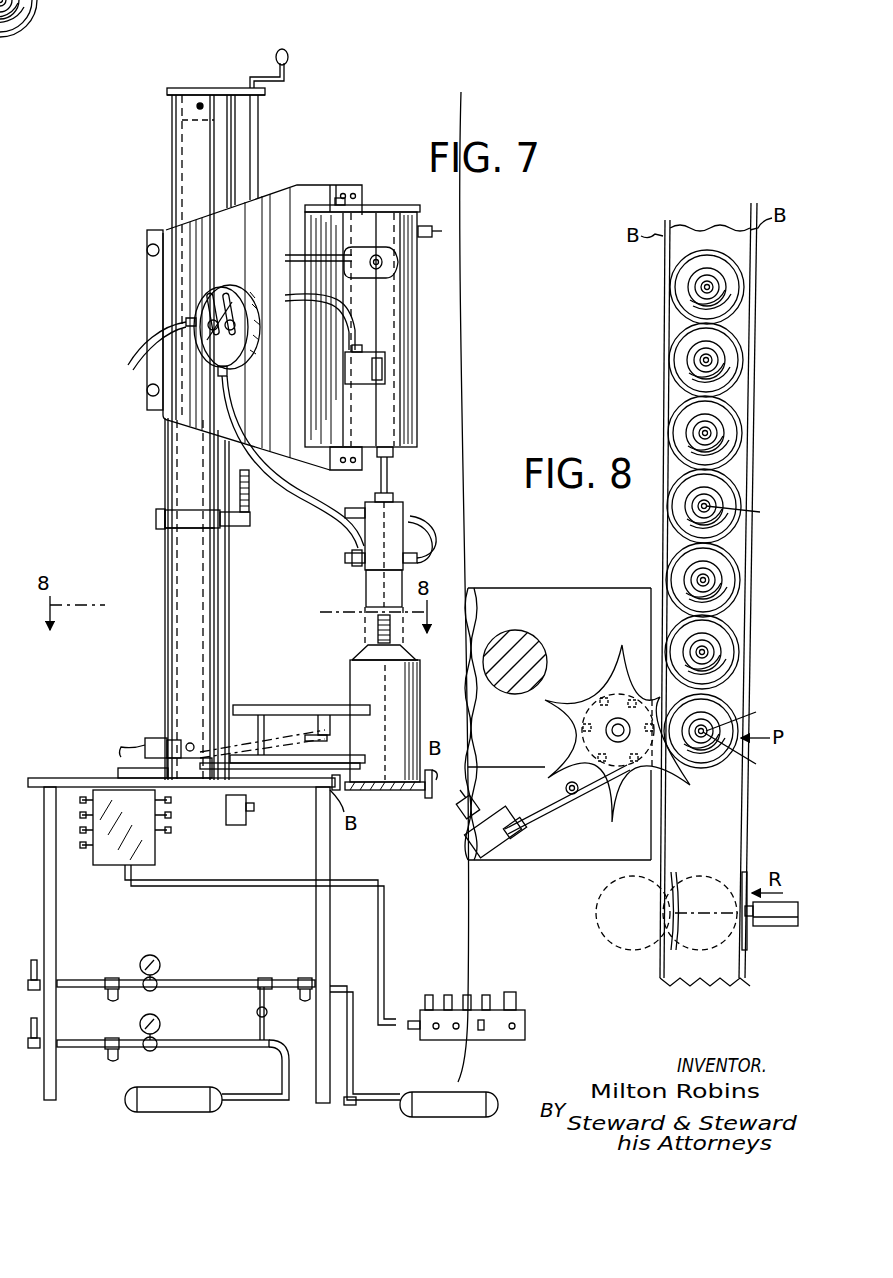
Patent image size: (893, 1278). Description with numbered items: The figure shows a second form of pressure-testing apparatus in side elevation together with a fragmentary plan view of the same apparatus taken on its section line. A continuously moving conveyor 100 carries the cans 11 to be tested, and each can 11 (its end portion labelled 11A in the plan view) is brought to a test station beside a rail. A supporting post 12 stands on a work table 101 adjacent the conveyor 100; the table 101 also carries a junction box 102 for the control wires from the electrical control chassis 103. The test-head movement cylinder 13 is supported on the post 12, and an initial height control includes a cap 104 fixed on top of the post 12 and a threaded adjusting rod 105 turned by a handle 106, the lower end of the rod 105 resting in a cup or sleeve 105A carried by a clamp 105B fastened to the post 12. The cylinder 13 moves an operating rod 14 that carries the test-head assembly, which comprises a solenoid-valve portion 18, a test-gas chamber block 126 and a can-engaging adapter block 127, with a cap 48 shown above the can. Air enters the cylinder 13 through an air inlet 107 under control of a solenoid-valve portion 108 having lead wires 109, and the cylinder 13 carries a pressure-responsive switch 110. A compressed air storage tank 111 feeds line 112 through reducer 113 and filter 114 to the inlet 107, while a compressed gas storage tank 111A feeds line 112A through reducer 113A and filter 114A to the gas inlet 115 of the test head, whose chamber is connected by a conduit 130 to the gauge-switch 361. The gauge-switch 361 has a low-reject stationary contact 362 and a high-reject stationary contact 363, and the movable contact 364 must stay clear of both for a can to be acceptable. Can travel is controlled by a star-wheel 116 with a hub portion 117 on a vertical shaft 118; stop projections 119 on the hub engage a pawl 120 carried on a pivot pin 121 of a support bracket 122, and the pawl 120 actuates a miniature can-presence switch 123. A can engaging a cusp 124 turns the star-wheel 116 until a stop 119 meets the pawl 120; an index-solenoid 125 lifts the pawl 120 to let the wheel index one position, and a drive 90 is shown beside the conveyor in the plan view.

In FIG. 7, the can 11 is at (350, 668).
In FIG. 8, the can 11 is at (671, 314).
In FIG. 7, the can end / stem 11A is at (377, 624).
In FIG. 8, the can end / stem 11A is at (747, 639).
In FIG. 7, the supporting post 12 is at (168, 495).
In FIG. 8, the supporting post 12 is at (520, 632).
In FIG. 7, the test-head movement cylinder 13 is at (406, 305).
In FIG. 7, the operating rod 14 is at (390, 471).
In FIG. 7, the solenoid-valve portion 18 is at (370, 550).
In FIG. 7, the can cap 48 is at (360, 648).
In FIG. 8, the can cap 48 is at (740, 715).
In FIG. 8, the motor 90 is at (766, 930).
In FIG. 7, the conveyor 100 is at (371, 792).
In FIG. 8, the conveyor 100 is at (750, 327).
In FIG. 7, the work table 101 is at (74, 772).
In FIG. 8, the work table 101 is at (558, 862).
In FIG. 7, the junction box 102 is at (108, 864).
In FIG. 7, the electrical control chassis 103 is at (492, 1042).
In FIG. 7, the cap 104 is at (208, 88).
In FIG. 7, the threaded adjusting rod 105 is at (254, 131).
In FIG. 7, the cup or sleeve 105A is at (250, 524).
In FIG. 7, the clamp 105B is at (168, 526).
In FIG. 7, the handle 106 is at (290, 63).
In FIG. 7, the air inlet 107 is at (440, 230).
In FIG. 7, the solenoid-valve portion 108 is at (376, 232).
In FIG. 7, the lead wires 109 is at (290, 250).
In FIG. 7, the pressure-responsive switch 110 is at (354, 376).
In FIG. 7, the compressed air storage tank 111 is at (432, 1095).
In FIG. 7, the compressed gas storage tank 111A is at (212, 1074).
In FIG. 7, the line 112 is at (232, 982).
In FIG. 7, the line 112A is at (240, 1041).
In FIG. 7, the reducer 113 is at (154, 965).
In FIG. 7, the reducer 113A is at (159, 1026).
In FIG. 7, the filter 114 is at (106, 997).
In FIG. 7, the filter 114A is at (106, 1061).
In FIG. 7, the gas inlet 115 is at (344, 558).
In FIG. 7, the star-wheel 116 is at (272, 702).
In FIG. 8, the star-wheel 116 is at (594, 702).
In FIG. 7, the hub portion 117 is at (330, 708).
In FIG. 8, the vertical shaft 118 is at (608, 733).
In FIG. 7, the stop projections 119 is at (317, 772).
In FIG. 8, the stop projections 119 is at (588, 736).
In FIG. 7, the pawl 120 is at (258, 773).
In FIG. 8, the pawl 120 is at (600, 780).
In FIG. 7, the pivot pin 121 is at (190, 738).
In FIG. 8, the pivot pin 121 is at (546, 838).
In FIG. 7, the support bracket 122 is at (142, 764).
In FIG. 8, the support bracket 122 is at (510, 846).
In FIG. 7, the miniature switch 123 is at (146, 736).
In FIG. 8, the miniature switch 123 is at (468, 846).
In FIG. 8, the cusps 124 is at (620, 642).
In FIG. 7, the index-solenoid 125 is at (226, 808).
In FIG. 8, the index-solenoid 125 is at (570, 796).
In FIG. 7, the test-gas chamber block 126 is at (362, 516).
In FIG. 7, the adapter block 127 is at (364, 603).
In FIG. 7, the conduit 130 is at (430, 550).
In FIG. 7, the gauge-switch 361 is at (238, 368).
In FIG. 7, the stationary contact 362 is at (222, 290).
In FIG. 7, the stationary contact 363 is at (250, 300).
In FIG. 7, the movable contact 364 is at (238, 332).